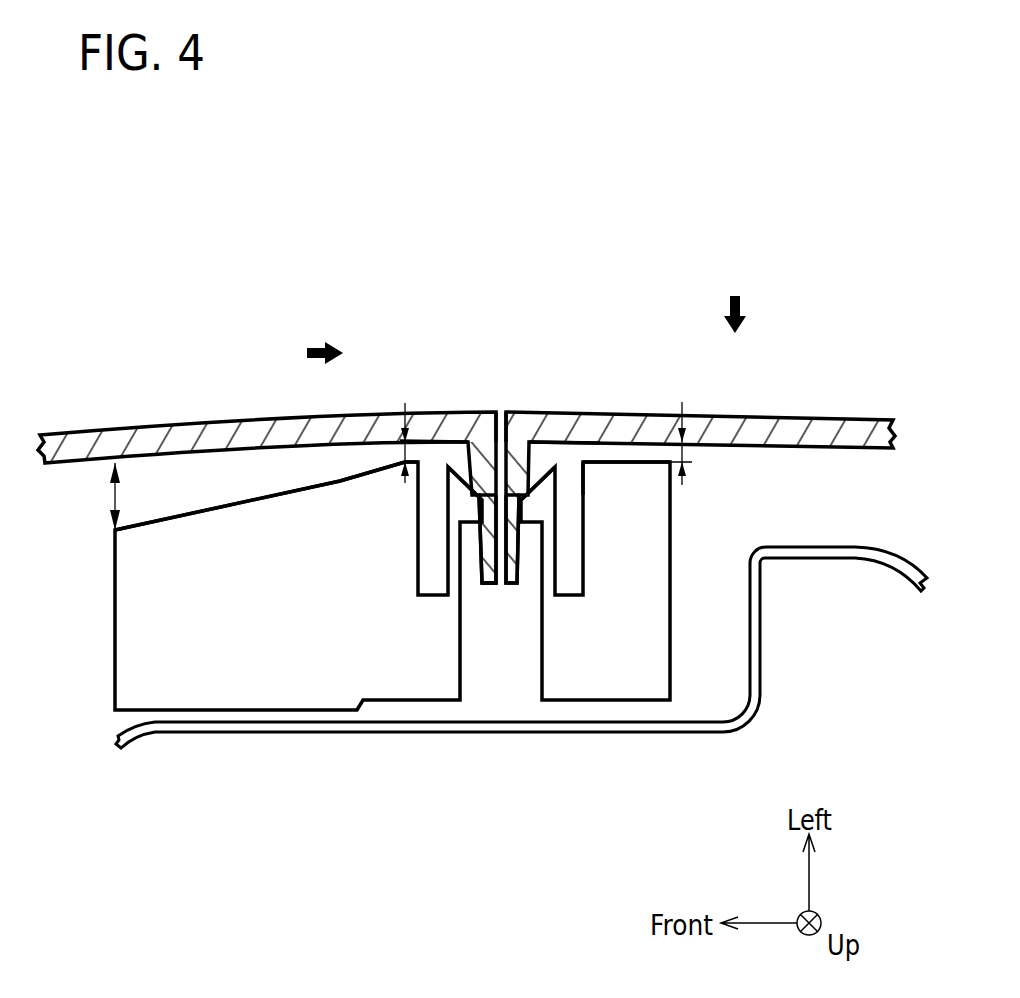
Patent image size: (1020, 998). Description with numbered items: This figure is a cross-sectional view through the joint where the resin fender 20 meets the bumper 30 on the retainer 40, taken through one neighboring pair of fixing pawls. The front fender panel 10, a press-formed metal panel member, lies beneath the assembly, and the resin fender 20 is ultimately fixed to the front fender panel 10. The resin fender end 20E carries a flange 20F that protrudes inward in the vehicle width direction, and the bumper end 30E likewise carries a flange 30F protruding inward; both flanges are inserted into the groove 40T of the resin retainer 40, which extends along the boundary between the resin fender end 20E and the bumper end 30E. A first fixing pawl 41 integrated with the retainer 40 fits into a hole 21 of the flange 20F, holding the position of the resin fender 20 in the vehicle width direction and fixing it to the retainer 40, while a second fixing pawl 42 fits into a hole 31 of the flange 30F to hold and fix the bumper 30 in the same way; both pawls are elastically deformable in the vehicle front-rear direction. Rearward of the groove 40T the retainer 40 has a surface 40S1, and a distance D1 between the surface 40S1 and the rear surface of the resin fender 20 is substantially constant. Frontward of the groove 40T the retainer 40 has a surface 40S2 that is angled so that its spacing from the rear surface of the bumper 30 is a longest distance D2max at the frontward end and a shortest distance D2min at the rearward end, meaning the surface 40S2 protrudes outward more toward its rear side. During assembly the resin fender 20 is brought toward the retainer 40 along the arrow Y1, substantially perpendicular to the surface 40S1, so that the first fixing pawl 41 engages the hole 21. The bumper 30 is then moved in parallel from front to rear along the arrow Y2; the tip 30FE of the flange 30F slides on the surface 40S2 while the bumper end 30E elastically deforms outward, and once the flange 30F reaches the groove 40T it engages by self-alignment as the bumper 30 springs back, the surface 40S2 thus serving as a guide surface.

The front fender panel 10 is at (675, 736).
The resin fender 20 is at (838, 430).
The resin fender end 20E is at (507, 412).
The flange 20F is at (518, 568).
The holes 21 is at (563, 458).
The bumper 30 is at (185, 437).
The bumper end 30E is at (497, 412).
The flange 30F is at (484, 560).
The tip 30FE is at (490, 590).
The holes 31 is at (450, 444).
The retainer 40 is at (140, 620).
The surface 40S1 is at (648, 465).
The surface 40S2 is at (267, 495).
The groove 40T is at (470, 503).
The first fixing pawls 41 is at (595, 478).
The second fixing pawls 42 is at (421, 458).
The distance D1 is at (683, 450).
The longest distance D2max is at (112, 495).
The shortest distance D2min is at (405, 448).
The arrow Y1 is at (746, 313).
The arrow Y2 is at (318, 345).